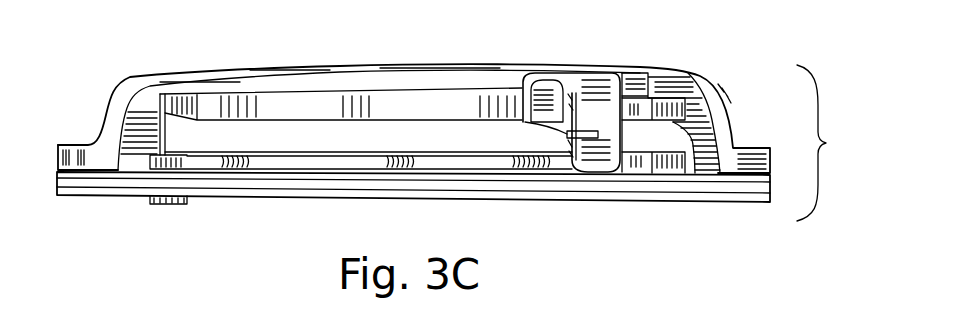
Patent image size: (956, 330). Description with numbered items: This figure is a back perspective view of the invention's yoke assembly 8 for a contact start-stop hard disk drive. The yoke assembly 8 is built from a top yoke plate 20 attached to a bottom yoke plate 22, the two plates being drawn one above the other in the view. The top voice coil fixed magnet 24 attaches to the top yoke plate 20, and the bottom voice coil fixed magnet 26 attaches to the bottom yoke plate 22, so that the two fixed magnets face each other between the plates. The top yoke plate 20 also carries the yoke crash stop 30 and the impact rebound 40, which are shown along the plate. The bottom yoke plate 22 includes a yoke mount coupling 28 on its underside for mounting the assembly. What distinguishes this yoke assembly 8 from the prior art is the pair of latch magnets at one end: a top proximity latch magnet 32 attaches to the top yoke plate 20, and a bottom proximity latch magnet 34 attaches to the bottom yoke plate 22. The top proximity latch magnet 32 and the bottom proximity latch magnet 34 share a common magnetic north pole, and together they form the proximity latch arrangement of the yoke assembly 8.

The yoke assembly 8 is at (821, 143).
The top yoke plate 20 is at (402, 66).
The bottom yoke plate 22 is at (538, 192).
The top voice coil fixed magnet 24 is at (287, 108).
The bottom voice coil fixed magnet 26 is at (373, 151).
The yoke mount coupling 28 is at (175, 204).
The yoke crash stop 30 is at (567, 134).
The top proximity latch magnet 32 is at (671, 123).
The bottom proximity latch magnet 34 is at (683, 165).
The impact rebound 40 is at (166, 144).